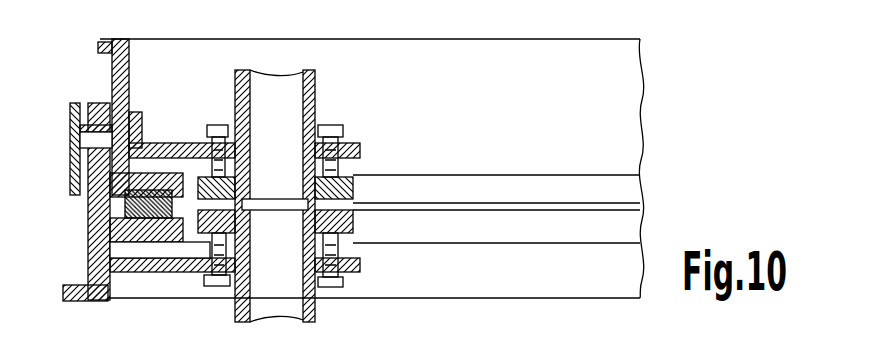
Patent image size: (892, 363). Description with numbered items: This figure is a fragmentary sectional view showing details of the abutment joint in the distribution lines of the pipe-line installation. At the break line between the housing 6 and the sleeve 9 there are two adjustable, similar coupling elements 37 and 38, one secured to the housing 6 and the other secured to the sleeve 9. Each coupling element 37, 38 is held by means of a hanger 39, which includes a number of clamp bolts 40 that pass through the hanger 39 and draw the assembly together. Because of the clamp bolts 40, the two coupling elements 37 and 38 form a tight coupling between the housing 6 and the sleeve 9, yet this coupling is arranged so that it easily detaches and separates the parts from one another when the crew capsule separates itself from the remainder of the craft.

The housing 6 is at (100, 44).
The sleeve 9 is at (90, 230).
The coupling element 37 is at (353, 178).
The coupling element 38 is at (355, 240).
The hanger 39 is at (159, 143).
The clamp bolts 40 is at (341, 290).